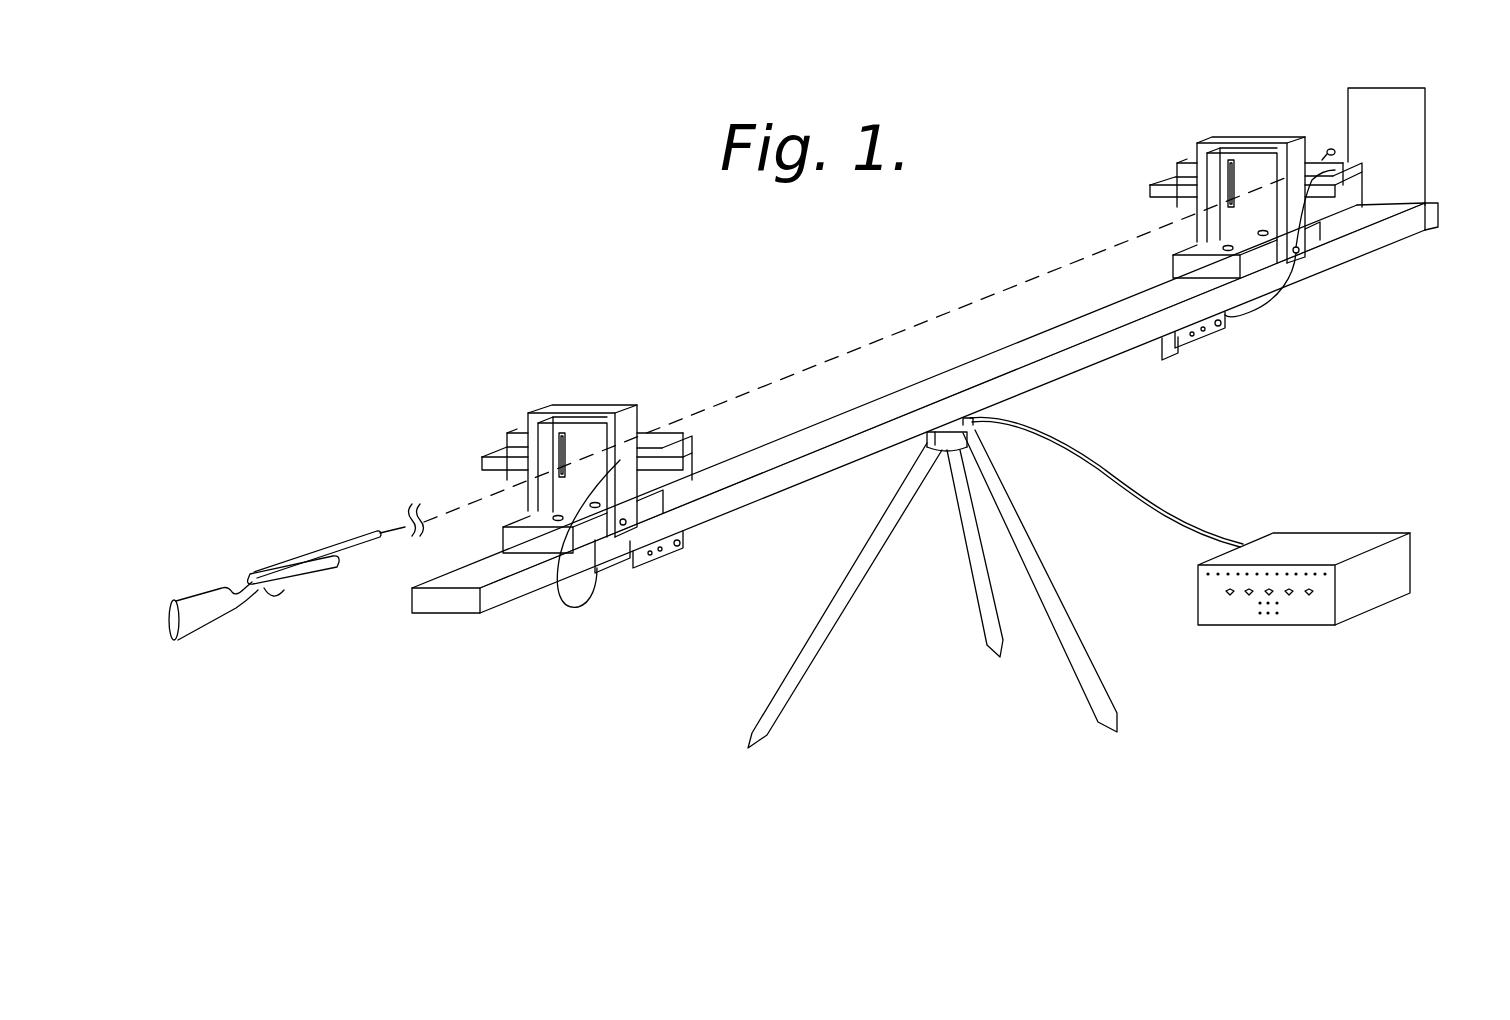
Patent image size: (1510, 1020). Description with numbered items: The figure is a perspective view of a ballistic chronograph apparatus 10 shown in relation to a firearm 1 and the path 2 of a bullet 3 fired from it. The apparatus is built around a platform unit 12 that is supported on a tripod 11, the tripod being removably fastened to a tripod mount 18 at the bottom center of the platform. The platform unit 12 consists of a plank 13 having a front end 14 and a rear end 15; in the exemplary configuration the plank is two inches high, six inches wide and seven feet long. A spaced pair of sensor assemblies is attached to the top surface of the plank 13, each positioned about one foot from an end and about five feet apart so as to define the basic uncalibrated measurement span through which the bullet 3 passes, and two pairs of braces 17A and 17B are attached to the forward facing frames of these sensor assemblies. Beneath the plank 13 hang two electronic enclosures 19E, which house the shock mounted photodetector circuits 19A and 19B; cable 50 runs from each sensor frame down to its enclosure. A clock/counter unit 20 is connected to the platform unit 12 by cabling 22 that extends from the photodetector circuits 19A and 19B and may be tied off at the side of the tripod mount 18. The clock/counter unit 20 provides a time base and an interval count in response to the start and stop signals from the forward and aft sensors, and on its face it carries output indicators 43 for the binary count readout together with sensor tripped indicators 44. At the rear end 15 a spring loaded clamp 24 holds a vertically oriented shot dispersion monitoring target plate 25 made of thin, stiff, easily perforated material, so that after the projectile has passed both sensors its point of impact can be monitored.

The firearm 1 is at (319, 550).
The projectile path 2 is at (782, 375).
The bullet 3 is at (1325, 150).
The chronograph apparatus 10 is at (660, 297).
The tripod 11 is at (853, 598).
The platform unit 12 is at (1087, 357).
The plank 13 is at (918, 395).
The front end 14 is at (427, 600).
The rear end 15 is at (1426, 232).
The front braces 17A is at (573, 410).
The rear braces 17B is at (1248, 140).
The tripod mount 18 is at (955, 425).
The front photodetector circuit 19A is at (653, 558).
The rear photodetector circuit 19B is at (1172, 357).
The electronic enclosures 19E is at (633, 577).
The clock/counter unit 20 is at (1261, 536).
The cabling 22 is at (1143, 506).
The spring loaded clamp 24 is at (1429, 203).
The shot dispersion monitoring target plate 25 is at (1347, 103).
The output indicators 43 is at (1305, 572).
The sensor tripped indicators 44 is at (1280, 583).
The sensor cable 50 is at (563, 604).